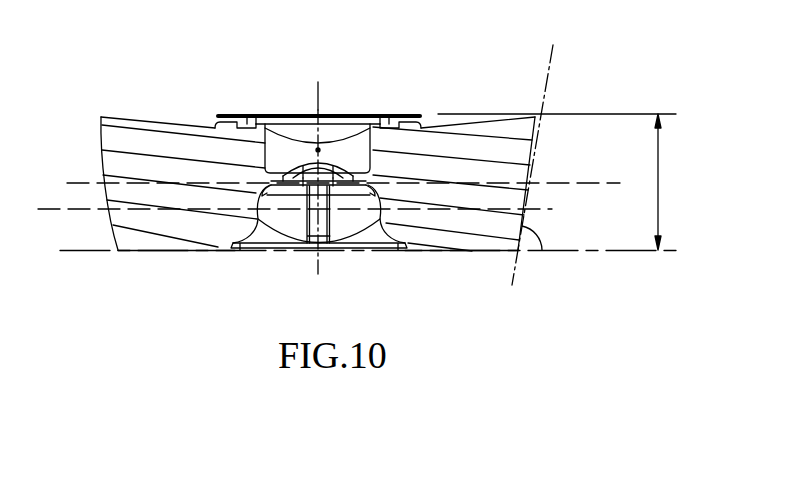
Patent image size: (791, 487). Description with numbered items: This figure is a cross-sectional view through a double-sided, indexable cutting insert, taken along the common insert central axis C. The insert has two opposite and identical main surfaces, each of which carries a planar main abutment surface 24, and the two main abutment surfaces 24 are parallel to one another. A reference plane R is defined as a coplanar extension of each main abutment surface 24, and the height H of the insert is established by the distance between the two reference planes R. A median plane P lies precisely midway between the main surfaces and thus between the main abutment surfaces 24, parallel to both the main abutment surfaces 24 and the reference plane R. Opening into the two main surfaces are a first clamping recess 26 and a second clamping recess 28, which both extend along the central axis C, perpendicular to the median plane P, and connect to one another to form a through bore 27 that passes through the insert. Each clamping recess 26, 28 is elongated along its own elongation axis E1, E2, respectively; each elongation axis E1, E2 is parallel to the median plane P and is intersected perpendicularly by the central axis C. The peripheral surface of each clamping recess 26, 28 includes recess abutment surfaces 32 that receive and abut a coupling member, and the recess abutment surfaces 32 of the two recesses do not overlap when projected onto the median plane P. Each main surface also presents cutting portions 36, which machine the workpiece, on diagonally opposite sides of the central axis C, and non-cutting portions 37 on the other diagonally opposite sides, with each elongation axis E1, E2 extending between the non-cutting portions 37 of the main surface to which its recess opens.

The main abutment surface 24 is at (405, 114).
The first clamping recess 26 is at (301, 75).
The through bore 27 is at (299, 184).
The second clamping recess 28 is at (300, 275).
The recess abutment surface 32 is at (306, 153).
The cutting portion 36 is at (136, 105).
The non-cutting portion 37 is at (530, 178).
The insert central axis C is at (320, 95).
The elongation axis of the first clamping recess E1 is at (342, 110).
The elongation axis of the second clamping recess E2 is at (67, 208).
The height of the insert H is at (671, 182).
The median plane P is at (578, 182).
The reference plane R is at (608, 113).